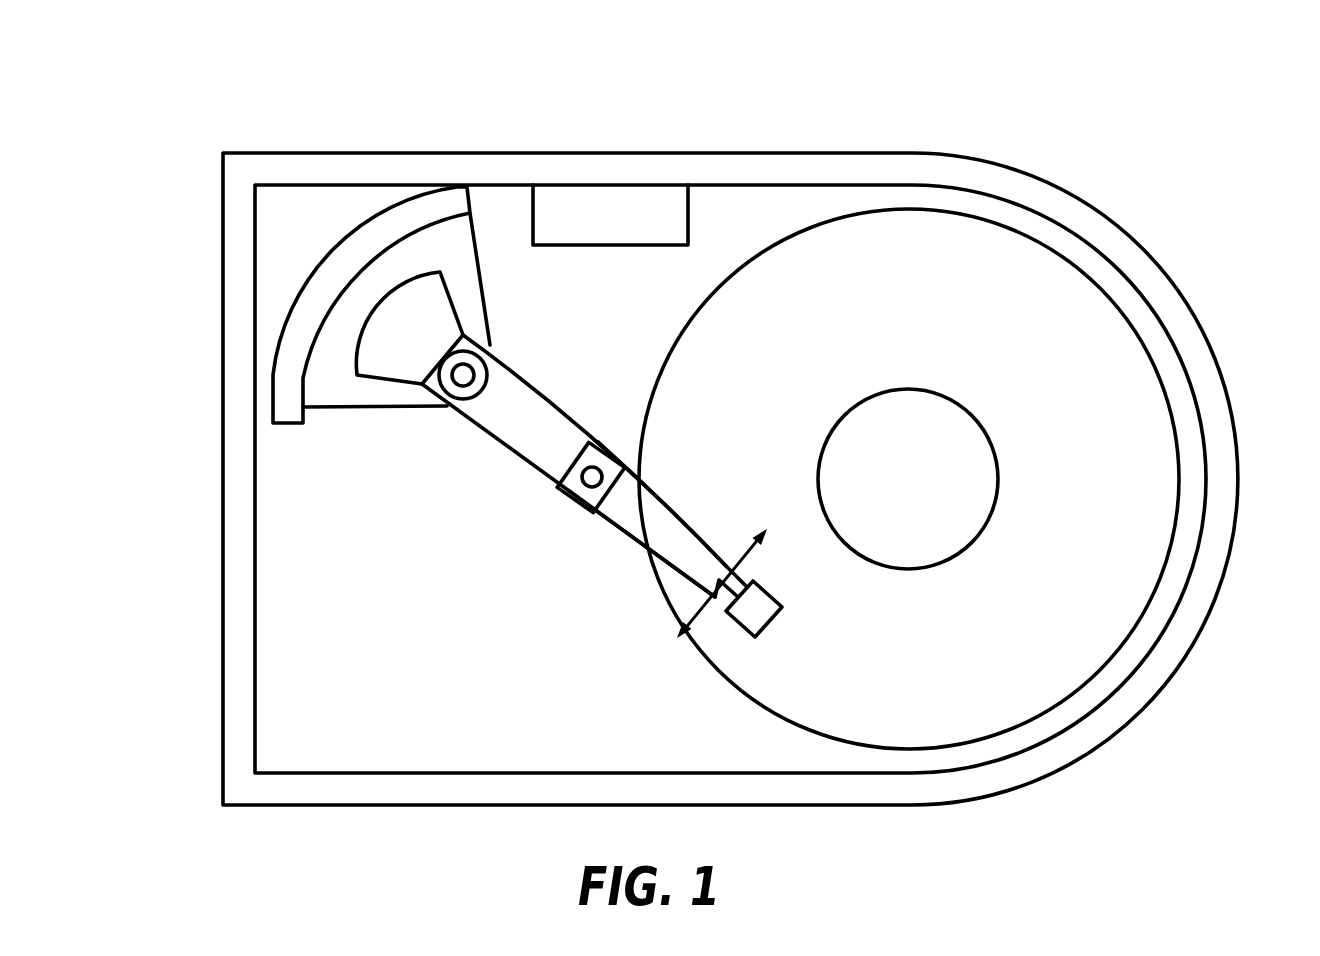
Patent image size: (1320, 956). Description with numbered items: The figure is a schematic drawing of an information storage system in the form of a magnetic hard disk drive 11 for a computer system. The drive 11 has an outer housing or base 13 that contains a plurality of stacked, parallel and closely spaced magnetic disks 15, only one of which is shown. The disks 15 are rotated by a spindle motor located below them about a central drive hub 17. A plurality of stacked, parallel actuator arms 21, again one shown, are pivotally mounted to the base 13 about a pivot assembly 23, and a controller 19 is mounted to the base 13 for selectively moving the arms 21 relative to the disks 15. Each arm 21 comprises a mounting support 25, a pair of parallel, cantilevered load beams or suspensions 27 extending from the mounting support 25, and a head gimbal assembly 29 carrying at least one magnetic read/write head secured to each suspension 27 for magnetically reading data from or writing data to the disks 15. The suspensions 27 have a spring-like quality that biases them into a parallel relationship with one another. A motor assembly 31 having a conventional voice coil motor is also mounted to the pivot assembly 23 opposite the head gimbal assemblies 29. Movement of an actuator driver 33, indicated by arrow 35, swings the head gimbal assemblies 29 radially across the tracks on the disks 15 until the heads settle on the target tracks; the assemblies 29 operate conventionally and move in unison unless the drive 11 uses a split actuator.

The magnetic hard disk drive 11 is at (1044, 100).
The base 13 is at (772, 153).
The magnetic disks 15 is at (1095, 336).
The central drive hub 17 is at (906, 389).
The controller 19 is at (585, 202).
The actuator arms 21 is at (470, 549).
The pivot assembly 23 is at (465, 373).
The mounting support 25 is at (551, 404).
The suspensions 27 is at (669, 514).
The head gimbal assembly 29 is at (778, 618).
The motor assembly 31 is at (371, 221).
The actuator driver 33 is at (333, 395).
The arrow 35 is at (712, 600).